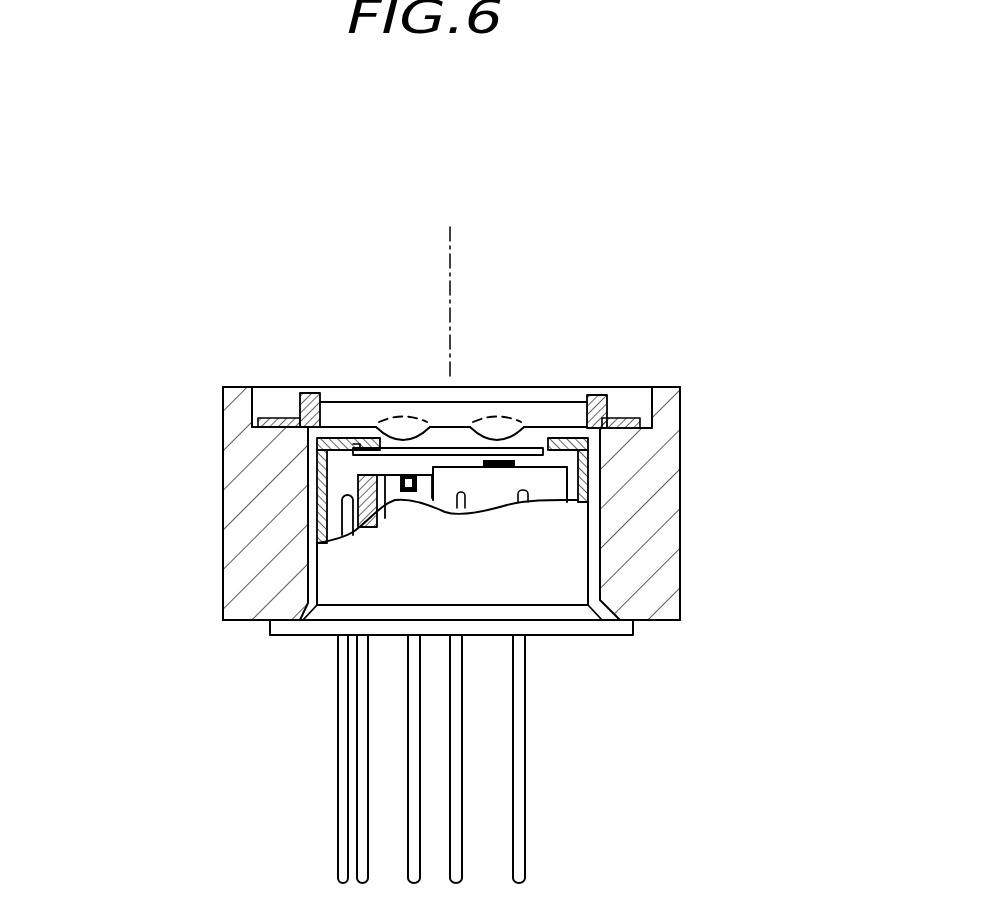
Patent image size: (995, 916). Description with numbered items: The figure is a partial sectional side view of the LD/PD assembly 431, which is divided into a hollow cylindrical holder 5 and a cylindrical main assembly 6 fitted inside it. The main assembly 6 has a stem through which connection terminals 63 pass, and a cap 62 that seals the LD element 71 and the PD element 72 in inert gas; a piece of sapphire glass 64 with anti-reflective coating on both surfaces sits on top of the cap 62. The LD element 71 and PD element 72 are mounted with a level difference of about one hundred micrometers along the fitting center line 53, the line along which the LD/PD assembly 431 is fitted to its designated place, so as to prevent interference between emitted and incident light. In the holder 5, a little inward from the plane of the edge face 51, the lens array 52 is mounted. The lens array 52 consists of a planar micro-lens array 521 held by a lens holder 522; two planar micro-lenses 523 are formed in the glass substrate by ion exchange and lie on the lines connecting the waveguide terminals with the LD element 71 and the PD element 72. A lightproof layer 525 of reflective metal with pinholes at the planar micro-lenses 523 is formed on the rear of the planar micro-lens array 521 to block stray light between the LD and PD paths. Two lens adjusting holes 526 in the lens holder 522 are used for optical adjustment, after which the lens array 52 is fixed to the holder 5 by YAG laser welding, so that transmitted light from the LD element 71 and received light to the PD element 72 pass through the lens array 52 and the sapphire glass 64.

The holder 5 is at (676, 518).
The main assembly 6 is at (570, 573).
The edge face 51 is at (231, 383).
The lens array 52 is at (540, 395).
The planar micro-lens array 521 is at (375, 407).
The lens holder 522 is at (318, 393).
The planar micro-lens 523 is at (417, 413).
The lightproof layer 525 is at (348, 436).
The lens adjusting holes 526 is at (275, 418).
The fitting center line 53 is at (452, 243).
The cap 62 is at (584, 458).
The connection terminals 63 is at (526, 862).
The sapphire glass 64 is at (453, 431).
The LD element 71 is at (408, 491).
The PD element 72 is at (503, 464).
The LD/PD assembly 431 is at (620, 248).